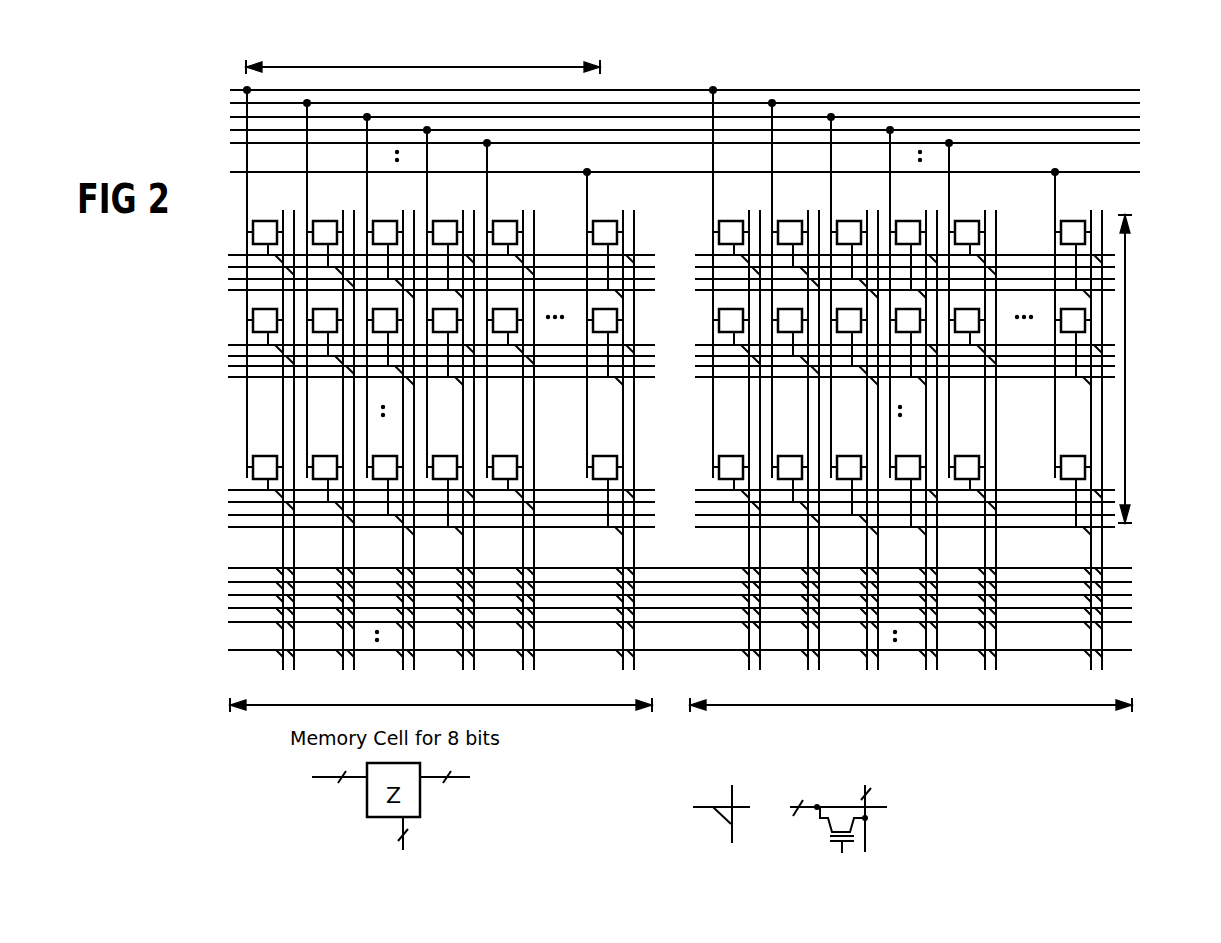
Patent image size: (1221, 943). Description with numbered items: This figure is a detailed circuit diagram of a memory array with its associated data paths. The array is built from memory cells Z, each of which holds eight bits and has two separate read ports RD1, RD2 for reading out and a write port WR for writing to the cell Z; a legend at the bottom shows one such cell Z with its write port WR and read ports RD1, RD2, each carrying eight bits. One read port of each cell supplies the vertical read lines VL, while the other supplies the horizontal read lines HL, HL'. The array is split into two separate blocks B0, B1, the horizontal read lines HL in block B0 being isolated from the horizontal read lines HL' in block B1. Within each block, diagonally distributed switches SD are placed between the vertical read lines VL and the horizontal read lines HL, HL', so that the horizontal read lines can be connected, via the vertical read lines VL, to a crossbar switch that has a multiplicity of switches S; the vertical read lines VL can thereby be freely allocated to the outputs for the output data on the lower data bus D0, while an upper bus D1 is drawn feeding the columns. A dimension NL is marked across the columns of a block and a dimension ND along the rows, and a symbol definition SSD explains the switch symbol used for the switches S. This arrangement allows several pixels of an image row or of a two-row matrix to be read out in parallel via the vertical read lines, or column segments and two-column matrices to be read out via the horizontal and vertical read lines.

The number of cache lines NL is at (433, 62).
The first data bus D1 is at (1148, 85).
The second data bus D0 is at (1140, 567).
The horizontal read lines HL is at (413, 391).
The horizontal read lines HL' is at (952, 391).
The vertical read lines VL is at (290, 445).
The memory cell Z is at (731, 221).
The switching diode SD is at (470, 378).
The switches S is at (535, 567).
The number of data words ND is at (1125, 422).
The block B0 is at (578, 705).
The block B1 is at (995, 705).
The write port WR is at (319, 788).
The read port RD1 is at (470, 788).
The read port RD2 is at (402, 849).
The switch symbol definition SSD is at (790, 819).